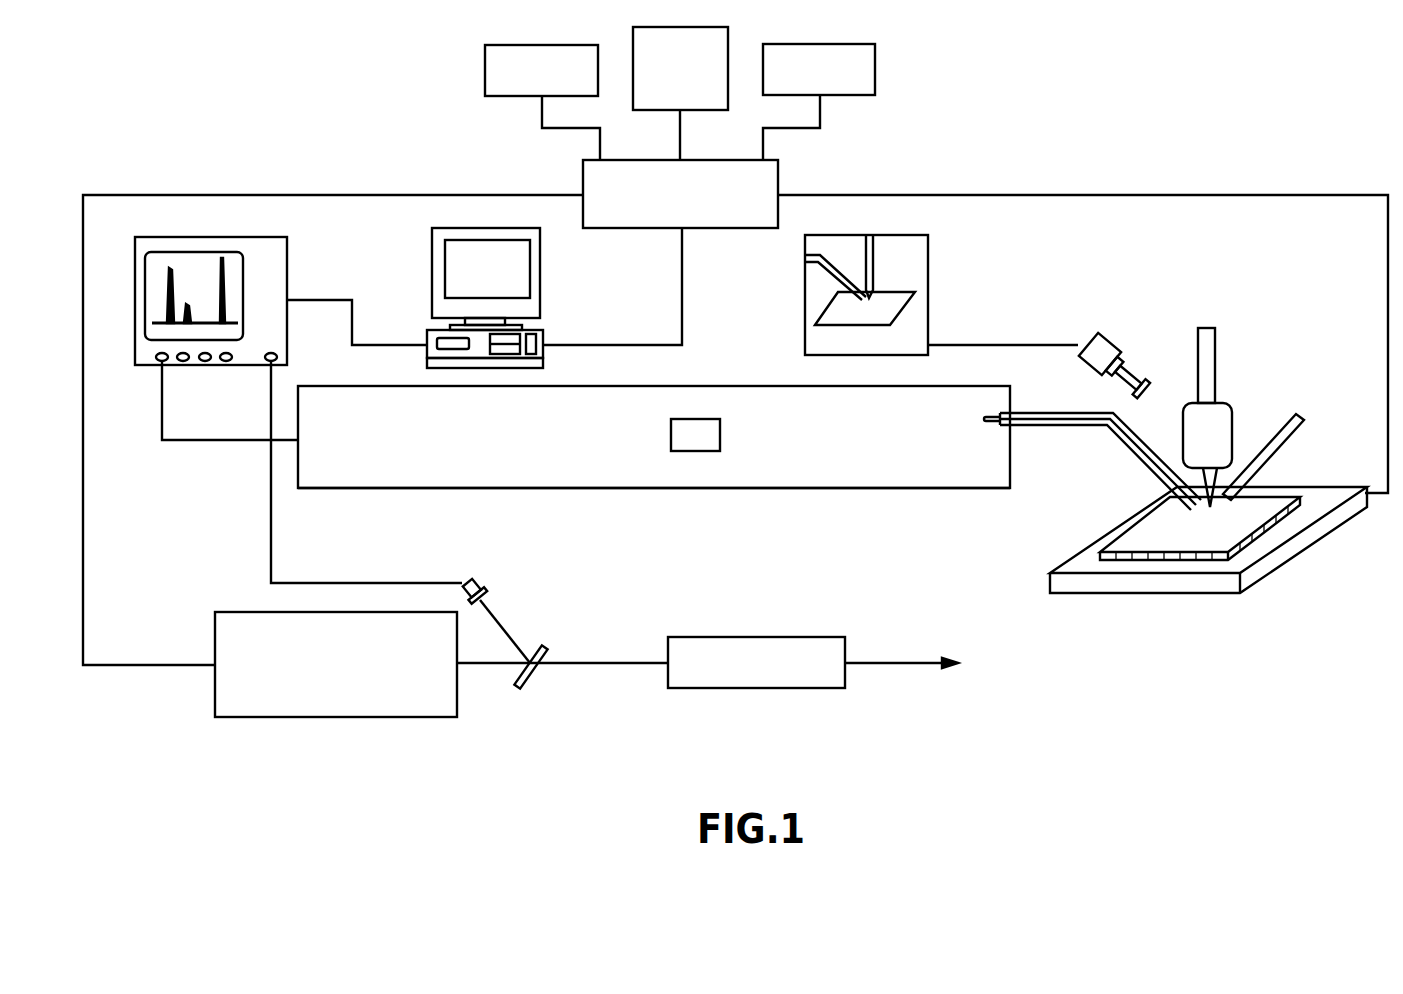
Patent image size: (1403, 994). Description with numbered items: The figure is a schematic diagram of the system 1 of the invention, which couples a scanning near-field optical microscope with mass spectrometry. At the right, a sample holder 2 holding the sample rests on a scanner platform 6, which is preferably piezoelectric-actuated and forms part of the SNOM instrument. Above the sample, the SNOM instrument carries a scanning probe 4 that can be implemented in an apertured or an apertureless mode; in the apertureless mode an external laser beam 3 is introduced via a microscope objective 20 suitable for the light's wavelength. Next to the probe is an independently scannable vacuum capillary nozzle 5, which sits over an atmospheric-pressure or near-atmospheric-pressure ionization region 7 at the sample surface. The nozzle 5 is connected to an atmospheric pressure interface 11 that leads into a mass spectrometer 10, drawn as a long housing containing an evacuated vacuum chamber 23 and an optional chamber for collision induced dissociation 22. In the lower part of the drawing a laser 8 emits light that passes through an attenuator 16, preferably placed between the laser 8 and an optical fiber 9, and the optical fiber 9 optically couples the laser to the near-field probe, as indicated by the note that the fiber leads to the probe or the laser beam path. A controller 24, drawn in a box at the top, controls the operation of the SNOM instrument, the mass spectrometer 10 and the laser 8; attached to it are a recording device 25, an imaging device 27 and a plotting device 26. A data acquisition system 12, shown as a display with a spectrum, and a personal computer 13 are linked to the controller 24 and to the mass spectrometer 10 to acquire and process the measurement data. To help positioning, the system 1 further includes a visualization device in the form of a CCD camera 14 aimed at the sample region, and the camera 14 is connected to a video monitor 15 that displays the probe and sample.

The system 1 is at (244, 166).
The sample holder 2 is at (1073, 560).
The external laser beam 3 is at (1207, 327).
The scanning probe 4 is at (1300, 413).
The vacuum capillary nozzle 5 is at (1153, 473).
The scanner platform 6 is at (1263, 573).
The ionization region 7 is at (1227, 520).
The laser 8 is at (337, 717).
The optical fiber 9 is at (890, 663).
The mass spectrometer 10 is at (783, 465).
The atmospheric pressure interface 11 is at (1017, 427).
The data acquisition system 12 is at (150, 367).
The personal computer 13 is at (540, 270).
The CCD camera 14 is at (1105, 330).
The video monitor 15 is at (928, 295).
The attenuator 16 is at (757, 688).
The microscope objective 20 is at (1227, 407).
The chamber for collision induced dissociation 22 is at (697, 451).
The evacuated vacuum chamber 23 is at (593, 488).
The controller 24 is at (665, 207).
The recording device 25 is at (527, 86).
The plotting device 26 is at (805, 84).
The imaging device 27 is at (665, 84).